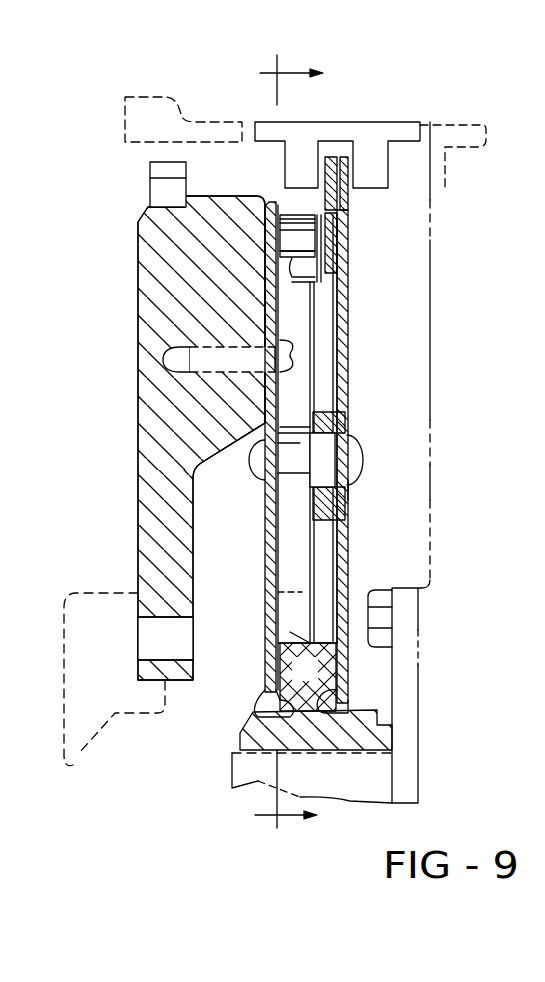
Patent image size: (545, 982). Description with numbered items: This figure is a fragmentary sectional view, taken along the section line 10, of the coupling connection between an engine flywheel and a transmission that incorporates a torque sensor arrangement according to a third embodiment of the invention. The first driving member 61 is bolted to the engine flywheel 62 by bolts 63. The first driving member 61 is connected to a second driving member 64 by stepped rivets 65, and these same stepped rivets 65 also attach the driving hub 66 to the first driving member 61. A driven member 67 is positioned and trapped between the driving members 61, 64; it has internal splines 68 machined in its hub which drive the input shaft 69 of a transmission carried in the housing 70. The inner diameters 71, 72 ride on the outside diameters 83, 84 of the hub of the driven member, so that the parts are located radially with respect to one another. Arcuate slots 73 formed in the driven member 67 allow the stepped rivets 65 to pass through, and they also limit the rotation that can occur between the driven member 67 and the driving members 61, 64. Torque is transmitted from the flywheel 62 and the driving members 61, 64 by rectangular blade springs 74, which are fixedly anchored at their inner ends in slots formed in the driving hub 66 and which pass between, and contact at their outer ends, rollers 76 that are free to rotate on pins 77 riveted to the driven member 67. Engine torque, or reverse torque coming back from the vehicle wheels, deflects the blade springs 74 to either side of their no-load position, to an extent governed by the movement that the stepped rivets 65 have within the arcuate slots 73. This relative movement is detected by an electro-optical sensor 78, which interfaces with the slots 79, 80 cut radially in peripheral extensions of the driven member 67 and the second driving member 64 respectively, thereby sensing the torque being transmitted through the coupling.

The section line 10- 10 is at (307, 448).
The first driving member 61 is at (268, 232).
The engine flywheel 62 is at (138, 296).
The bolts 63 is at (197, 372).
The second driving member 64 is at (348, 300).
The stepped rivets 65 is at (360, 463).
The driving hub 66 is at (275, 613).
The driven member 67 is at (340, 568).
The internal splines 68 is at (242, 730).
The input shaft 69 is at (250, 790).
The housing 70 is at (432, 435).
The inner diameter 71 is at (305, 698).
The inner diameter 72 is at (318, 690).
The arcuate slots 73 is at (348, 490).
The rectangular blade springs 74 is at (310, 337).
The rollers 76 is at (337, 281).
The pins 77 is at (347, 206).
The electro-optical sensor 78 is at (380, 123).
The slot 79 is at (325, 165).
The slot 80 is at (352, 171).
The outside diameter 83 is at (262, 712).
The outside diameter 84 is at (348, 704).